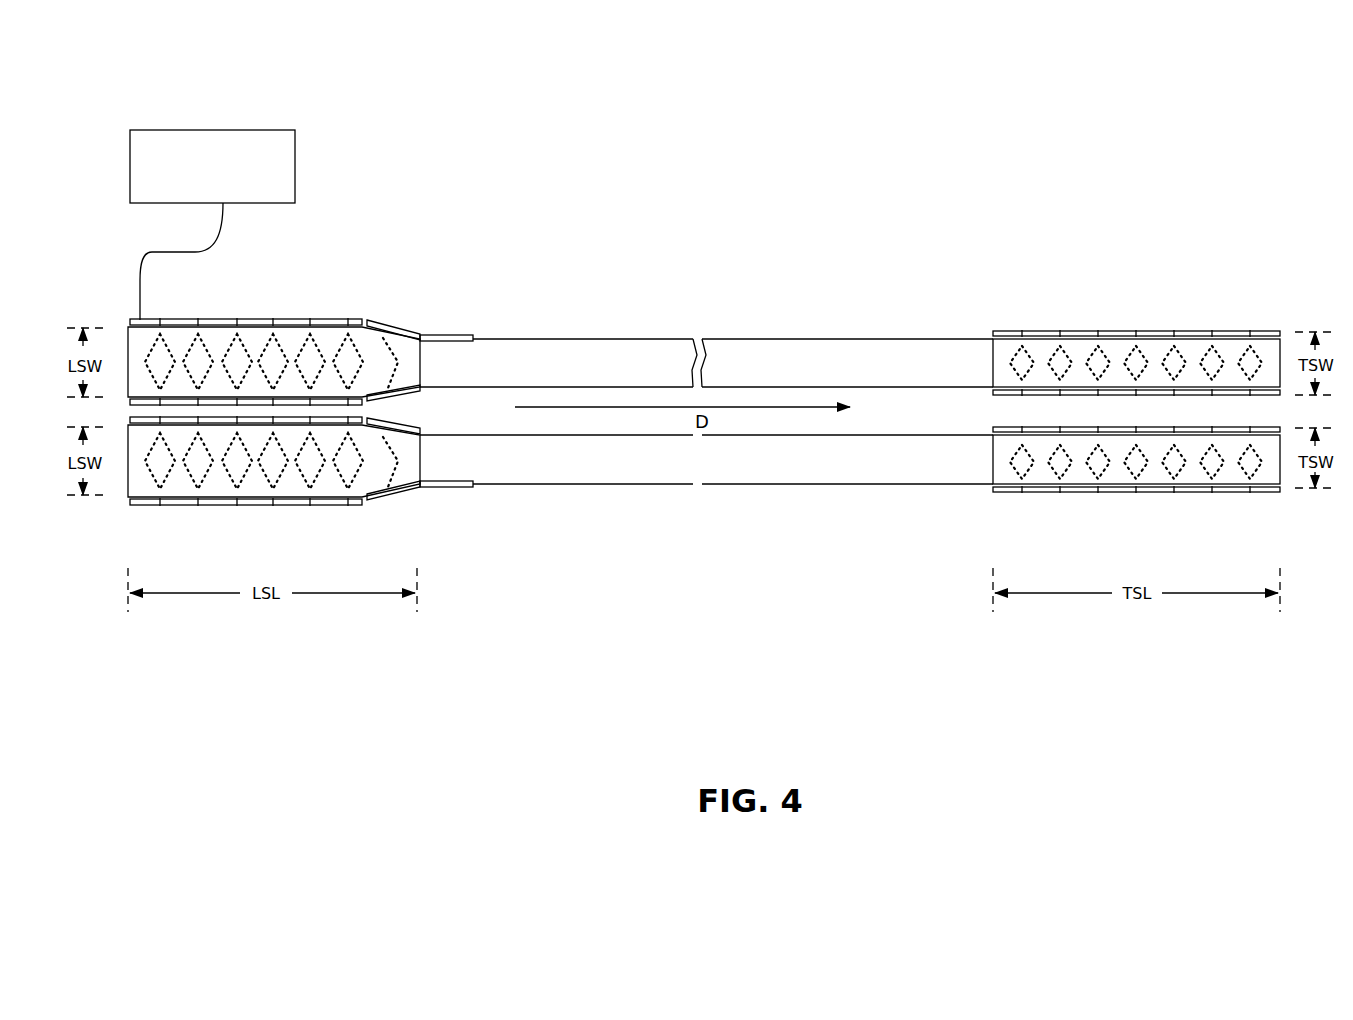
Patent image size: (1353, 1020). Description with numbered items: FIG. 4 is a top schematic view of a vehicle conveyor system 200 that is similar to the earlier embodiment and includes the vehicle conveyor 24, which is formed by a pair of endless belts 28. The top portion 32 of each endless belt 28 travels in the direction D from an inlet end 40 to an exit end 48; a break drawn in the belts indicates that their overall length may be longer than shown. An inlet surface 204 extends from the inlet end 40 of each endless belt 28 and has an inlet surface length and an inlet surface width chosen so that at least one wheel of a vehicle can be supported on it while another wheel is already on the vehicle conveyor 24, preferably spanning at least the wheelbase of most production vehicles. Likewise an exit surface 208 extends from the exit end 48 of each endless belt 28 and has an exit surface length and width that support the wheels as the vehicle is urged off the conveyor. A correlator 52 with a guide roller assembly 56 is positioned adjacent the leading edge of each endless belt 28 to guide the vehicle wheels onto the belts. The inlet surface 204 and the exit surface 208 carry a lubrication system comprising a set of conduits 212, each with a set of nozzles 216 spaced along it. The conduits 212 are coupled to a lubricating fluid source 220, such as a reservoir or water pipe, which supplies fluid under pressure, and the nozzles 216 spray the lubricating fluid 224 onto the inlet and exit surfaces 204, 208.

The vehicle conveyor system 200 is at (408, 173).
The lubricating fluid source 220 is at (198, 178).
The inlet surface 204 is at (133, 323).
The conduit 212 is at (268, 322).
The nozzle 216 is at (198, 321).
The correlator 52 is at (371, 307).
The guide roller assembly 56 is at (393, 327).
The inlet end 40 is at (437, 367).
The endless belt 28 is at (582, 353).
The vehicle conveyor 24 is at (800, 317).
The top portion 32 is at (860, 370).
The exit end 48 is at (966, 363).
The exit surface 208 is at (1233, 352).
The lubricating fluid 224 is at (1258, 348).